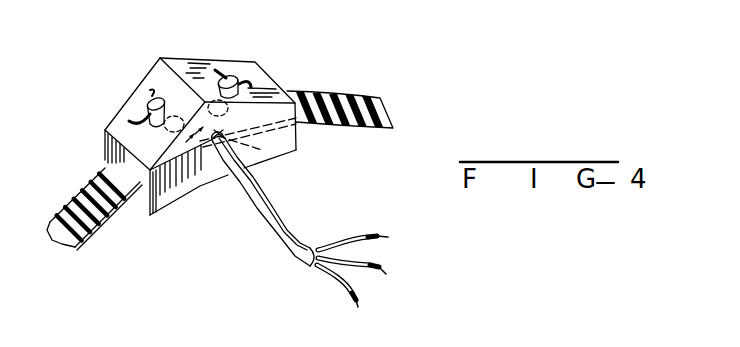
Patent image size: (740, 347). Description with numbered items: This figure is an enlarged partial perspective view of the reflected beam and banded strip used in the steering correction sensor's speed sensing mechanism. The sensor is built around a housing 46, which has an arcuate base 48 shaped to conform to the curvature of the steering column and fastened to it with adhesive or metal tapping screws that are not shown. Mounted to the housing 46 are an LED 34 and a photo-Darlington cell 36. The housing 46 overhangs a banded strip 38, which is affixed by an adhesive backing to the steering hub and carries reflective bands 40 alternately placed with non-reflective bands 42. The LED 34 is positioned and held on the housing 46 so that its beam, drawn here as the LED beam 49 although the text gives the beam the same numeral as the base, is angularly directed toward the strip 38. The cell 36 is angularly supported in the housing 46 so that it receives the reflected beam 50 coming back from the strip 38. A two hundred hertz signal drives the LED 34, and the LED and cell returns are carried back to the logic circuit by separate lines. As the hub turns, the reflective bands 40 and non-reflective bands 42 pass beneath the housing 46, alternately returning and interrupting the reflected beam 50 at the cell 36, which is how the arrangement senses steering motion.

The LED 34 is at (150, 110).
The photo-Darlington cell 36 is at (234, 80).
The banded strip 38 is at (99, 217).
The reflective bands 40 is at (354, 93).
The non-reflective bands 42 is at (347, 128).
The housing 46 is at (158, 57).
The arcuate base 48 is at (183, 186).
The contact arrows 49 is at (205, 167).
The reflected beam 50 is at (249, 148).